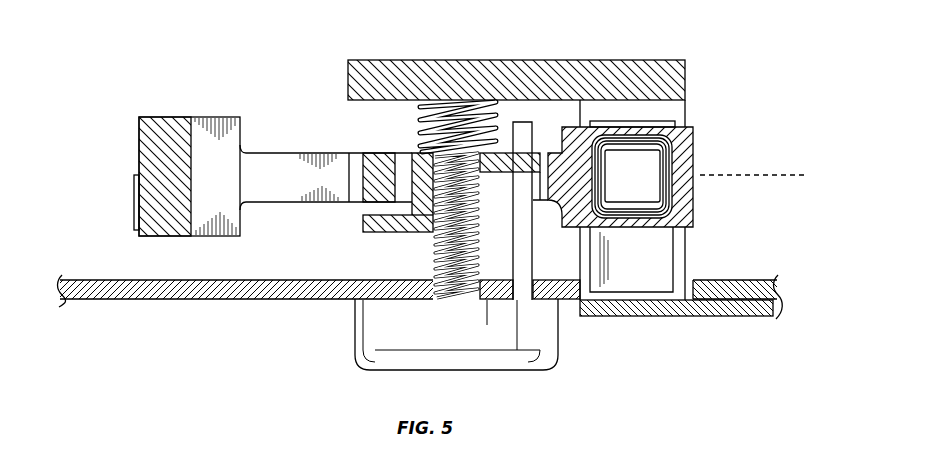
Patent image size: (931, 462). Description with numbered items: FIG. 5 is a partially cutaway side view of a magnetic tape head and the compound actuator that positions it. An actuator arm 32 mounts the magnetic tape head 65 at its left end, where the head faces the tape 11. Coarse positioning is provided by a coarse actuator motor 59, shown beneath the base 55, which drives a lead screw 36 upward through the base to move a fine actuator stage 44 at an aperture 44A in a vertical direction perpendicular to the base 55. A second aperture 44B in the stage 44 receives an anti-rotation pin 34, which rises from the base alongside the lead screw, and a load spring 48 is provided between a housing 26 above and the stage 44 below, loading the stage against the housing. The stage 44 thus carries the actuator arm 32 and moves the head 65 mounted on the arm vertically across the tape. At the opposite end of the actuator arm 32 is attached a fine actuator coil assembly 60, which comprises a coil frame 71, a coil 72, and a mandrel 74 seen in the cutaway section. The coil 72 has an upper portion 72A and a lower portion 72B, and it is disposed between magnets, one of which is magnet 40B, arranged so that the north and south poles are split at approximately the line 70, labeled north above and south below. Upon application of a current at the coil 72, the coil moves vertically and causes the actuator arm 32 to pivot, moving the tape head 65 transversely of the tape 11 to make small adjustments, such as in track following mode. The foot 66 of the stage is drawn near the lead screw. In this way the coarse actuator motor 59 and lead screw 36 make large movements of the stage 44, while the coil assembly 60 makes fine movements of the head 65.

The tape 11 is at (134, 203).
The housing 26 is at (385, 60).
The actuator arm 32 is at (306, 146).
The anti-rotation pin 34 is at (517, 122).
The lead screw 36 is at (436, 246).
The magnet 40B is at (627, 120).
The fine actuator stage 44 is at (410, 170).
The aperture 44A is at (483, 160).
The aperture 44B is at (536, 153).
The load spring 48 is at (418, 125).
The base 55 is at (118, 300).
The coarse actuator motor 59 is at (353, 320).
The fine actuator coil assembly 60 is at (697, 147).
The magnetic tape head 65 is at (217, 117).
The bracket foot 66 is at (363, 221).
The line 70 is at (797, 175).
The coil frame 71 is at (694, 212).
The coil 72 is at (663, 157).
The upper portion 72A is at (650, 148).
The lower portion 72B is at (633, 226).
The mandrel 74 is at (646, 191).